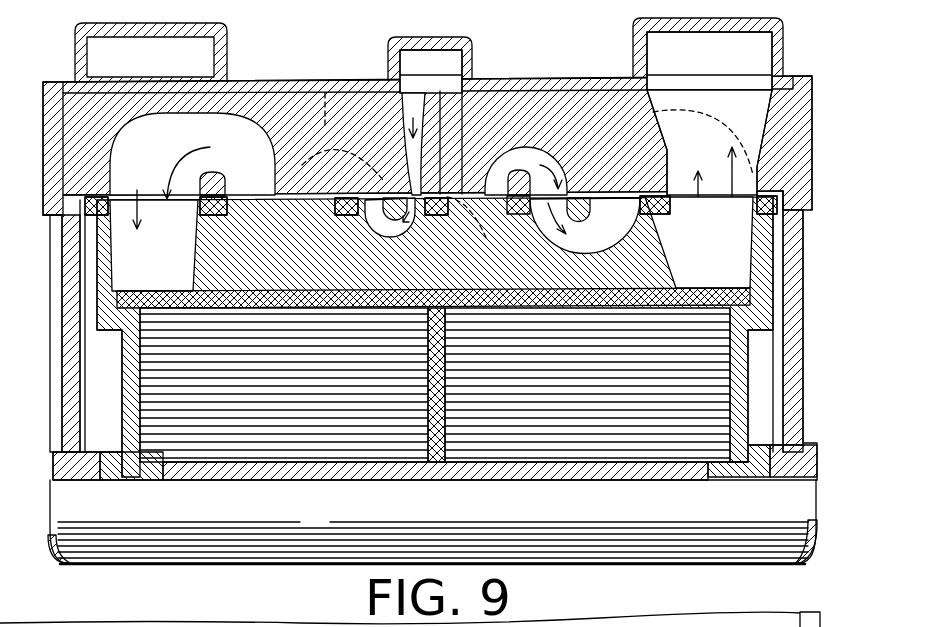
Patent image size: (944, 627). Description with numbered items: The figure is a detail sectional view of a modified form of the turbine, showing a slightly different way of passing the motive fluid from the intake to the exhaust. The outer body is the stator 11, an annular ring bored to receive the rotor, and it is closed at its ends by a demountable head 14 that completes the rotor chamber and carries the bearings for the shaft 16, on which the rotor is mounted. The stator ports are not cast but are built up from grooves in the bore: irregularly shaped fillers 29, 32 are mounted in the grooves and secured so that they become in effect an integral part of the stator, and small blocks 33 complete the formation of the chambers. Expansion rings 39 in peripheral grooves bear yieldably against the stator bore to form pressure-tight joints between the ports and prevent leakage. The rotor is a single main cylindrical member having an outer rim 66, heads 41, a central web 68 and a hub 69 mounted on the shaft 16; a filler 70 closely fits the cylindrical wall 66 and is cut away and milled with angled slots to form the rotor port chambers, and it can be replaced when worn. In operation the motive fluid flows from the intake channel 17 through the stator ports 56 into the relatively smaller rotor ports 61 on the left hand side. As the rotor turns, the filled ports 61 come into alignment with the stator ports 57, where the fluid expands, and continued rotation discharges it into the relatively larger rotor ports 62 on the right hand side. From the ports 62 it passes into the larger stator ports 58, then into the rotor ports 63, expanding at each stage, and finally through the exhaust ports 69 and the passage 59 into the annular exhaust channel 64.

The stator 11 is at (553, 77).
The head 14 is at (70, 405).
The shaft 16 is at (432, 522).
The intake channel 17 is at (458, 48).
The filler plate 29 is at (268, 104).
The filler plate 32 is at (783, 90).
The block 33 is at (213, 173).
The expansion ring 39 is at (108, 197).
The rotor head 41 is at (133, 436).
The stator port 56 is at (410, 117).
The stator port 57 is at (321, 86).
The stator port 58 is at (628, 122).
The exhaust outlet passage 59 is at (709, 159).
The rotor port 61 is at (497, 368).
The rotor port 62 is at (272, 362).
The rotor port 63 is at (431, 244).
The exhaust channel 64 is at (429, 54).
The rim 66 is at (590, 307).
The web 68 is at (433, 430).
The hub 69 is at (517, 470).
The filler 70 is at (397, 289).